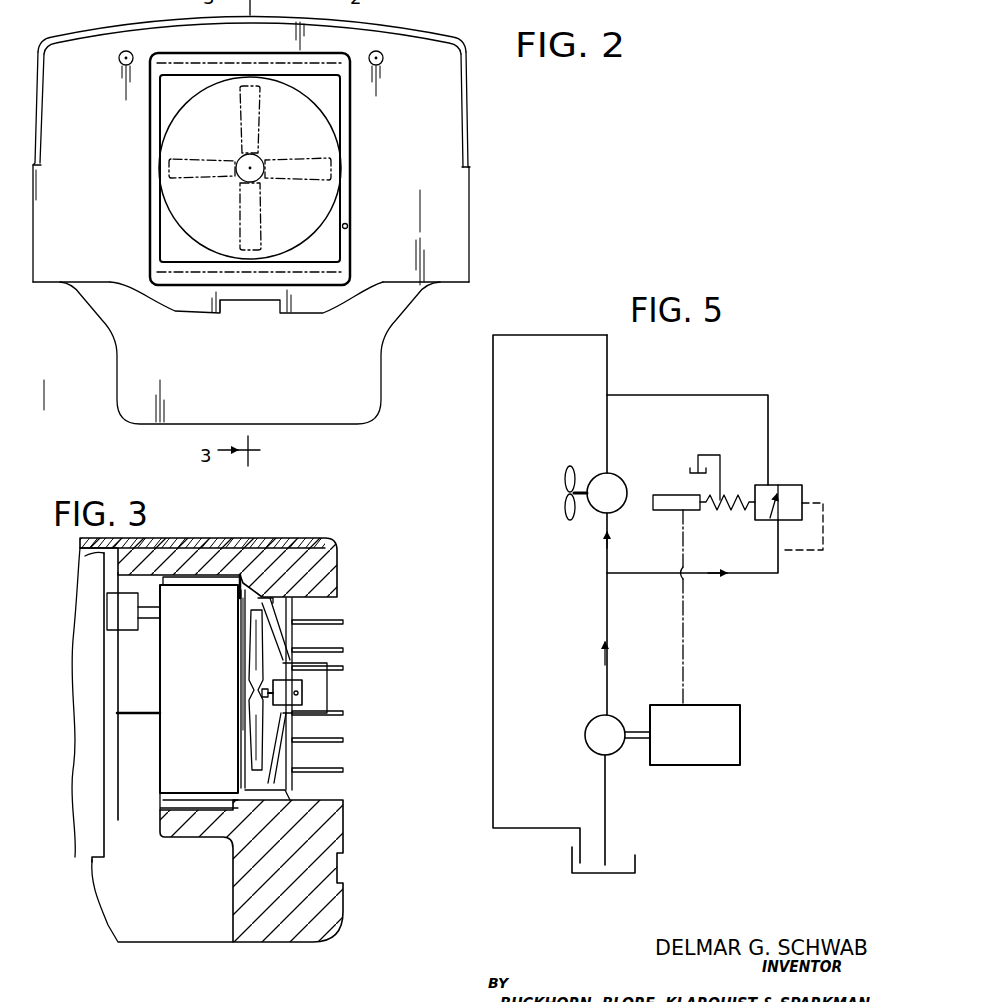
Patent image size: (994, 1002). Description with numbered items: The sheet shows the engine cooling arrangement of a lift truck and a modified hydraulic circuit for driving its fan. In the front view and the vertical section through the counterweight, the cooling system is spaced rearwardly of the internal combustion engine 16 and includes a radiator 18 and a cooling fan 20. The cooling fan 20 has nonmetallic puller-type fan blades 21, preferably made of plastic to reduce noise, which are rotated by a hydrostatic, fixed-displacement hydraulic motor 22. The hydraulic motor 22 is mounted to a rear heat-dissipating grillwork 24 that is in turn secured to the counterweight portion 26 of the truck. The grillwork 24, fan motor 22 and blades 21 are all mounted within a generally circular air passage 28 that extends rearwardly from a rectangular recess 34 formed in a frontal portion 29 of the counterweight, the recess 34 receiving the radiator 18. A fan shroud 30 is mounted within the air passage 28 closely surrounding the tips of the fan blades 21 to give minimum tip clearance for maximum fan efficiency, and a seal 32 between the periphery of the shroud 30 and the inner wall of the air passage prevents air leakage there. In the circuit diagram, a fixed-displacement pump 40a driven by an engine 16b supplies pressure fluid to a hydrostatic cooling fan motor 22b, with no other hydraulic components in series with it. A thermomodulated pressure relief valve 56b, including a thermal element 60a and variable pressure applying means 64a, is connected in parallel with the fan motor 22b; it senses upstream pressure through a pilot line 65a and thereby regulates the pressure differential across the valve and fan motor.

In FIG. 2, the internal combustion engine 16 is at (252, 27).
In FIG. 3, the internal combustion engine 16 is at (76, 800).
In FIG. 2, the radiator 18 is at (222, 62).
In FIG. 3, the radiator 18 is at (158, 762).
In FIG. 2, the cooling fan 20 is at (157, 160).
In FIG. 3, the cooling fan 20 is at (248, 660).
In FIG. 2, the fan blades 21 is at (152, 194).
In FIG. 3, the fan blades 21 is at (250, 737).
In FIG. 3, the hydraulic motor 22 is at (325, 705).
In FIG. 3, the heat-dissipating grillwork 24 is at (343, 737).
In FIG. 2, the counterweight portion 26 is at (463, 35).
In FIG. 3, the counterweight portion 26 is at (340, 580).
In FIG. 2, the air passage 28 is at (326, 118).
In FIG. 3, the air passage 28 is at (294, 597).
In FIG. 2, the frontal portion 29 is at (410, 200).
In FIG. 3, the frontal portion 29 is at (158, 828).
In FIG. 3, the fan shroud 30 is at (278, 775).
In FIG. 3, the seal 32 is at (273, 575).
In FIG. 2, the rectangular recess 34 is at (350, 233).
In FIG. 3, the rectangular recess 34 is at (203, 800).
In FIG. 5, the hydrostatic cooling fan motor 22b is at (597, 512).
In FIG. 5, the fixed-displacement pump 40a is at (589, 745).
In FIG. 5, the thermomodulated pressure relief valve 56b is at (790, 485).
In FIG. 5, the thermal element 60a is at (671, 495).
In FIG. 5, the variable pressure applying means 64a is at (721, 511).
In FIG. 5, the pilot line 65a is at (823, 526).
In FIG. 5, the engine 16b is at (690, 765).